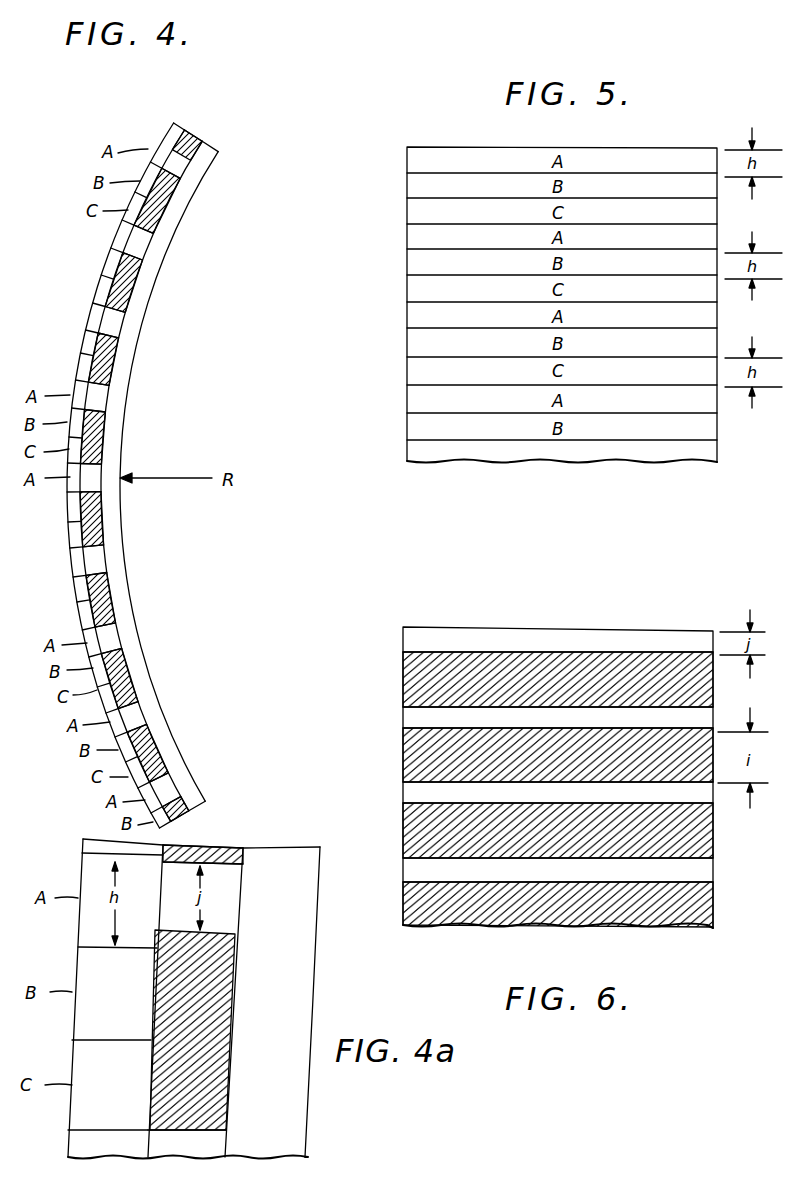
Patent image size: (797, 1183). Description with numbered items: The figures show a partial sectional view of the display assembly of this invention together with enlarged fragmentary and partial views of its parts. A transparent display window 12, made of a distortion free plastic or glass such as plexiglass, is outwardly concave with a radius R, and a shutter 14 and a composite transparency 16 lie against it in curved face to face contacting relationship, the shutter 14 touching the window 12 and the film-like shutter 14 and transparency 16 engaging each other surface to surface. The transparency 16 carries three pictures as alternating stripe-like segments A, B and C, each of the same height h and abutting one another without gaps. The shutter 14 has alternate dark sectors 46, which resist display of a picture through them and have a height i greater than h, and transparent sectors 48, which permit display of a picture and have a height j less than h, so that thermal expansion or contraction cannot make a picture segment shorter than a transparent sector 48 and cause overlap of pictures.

In FIG. 4, the transparent display window 12 is at (205, 147).
In FIG. 4A, the transparent display window 12 is at (283, 846).
In FIG. 4, the shutter 14 is at (194, 140).
In FIG. 4A, the shutter 14 is at (219, 846).
In FIG. 4, the composite transparency 16 is at (171, 126).
In FIG. 4A, the composite transparency 16 is at (83, 840).
In FIG. 4, the dark sectors 46 is at (170, 200).
In FIG. 4A, the dark sectors 46 is at (228, 1030).
In FIG. 6, the dark sectors 46 is at (408, 679).
In FIG. 4, the transparent sectors 48 is at (172, 170).
In FIG. 4A, the transparent sectors 48 is at (232, 899).
In FIG. 6, the transparent sectors 48 is at (408, 641).